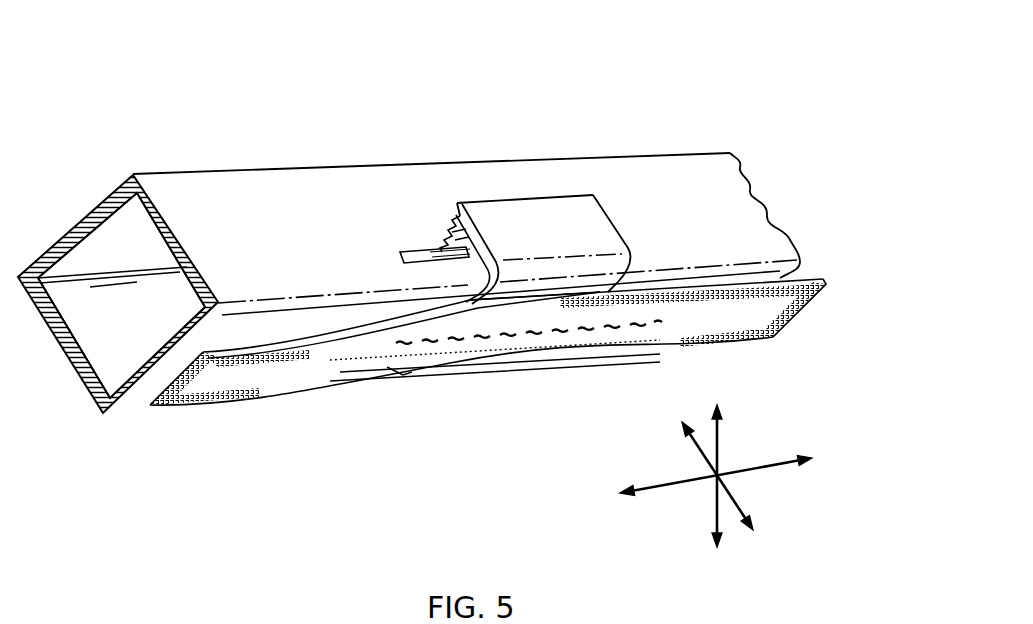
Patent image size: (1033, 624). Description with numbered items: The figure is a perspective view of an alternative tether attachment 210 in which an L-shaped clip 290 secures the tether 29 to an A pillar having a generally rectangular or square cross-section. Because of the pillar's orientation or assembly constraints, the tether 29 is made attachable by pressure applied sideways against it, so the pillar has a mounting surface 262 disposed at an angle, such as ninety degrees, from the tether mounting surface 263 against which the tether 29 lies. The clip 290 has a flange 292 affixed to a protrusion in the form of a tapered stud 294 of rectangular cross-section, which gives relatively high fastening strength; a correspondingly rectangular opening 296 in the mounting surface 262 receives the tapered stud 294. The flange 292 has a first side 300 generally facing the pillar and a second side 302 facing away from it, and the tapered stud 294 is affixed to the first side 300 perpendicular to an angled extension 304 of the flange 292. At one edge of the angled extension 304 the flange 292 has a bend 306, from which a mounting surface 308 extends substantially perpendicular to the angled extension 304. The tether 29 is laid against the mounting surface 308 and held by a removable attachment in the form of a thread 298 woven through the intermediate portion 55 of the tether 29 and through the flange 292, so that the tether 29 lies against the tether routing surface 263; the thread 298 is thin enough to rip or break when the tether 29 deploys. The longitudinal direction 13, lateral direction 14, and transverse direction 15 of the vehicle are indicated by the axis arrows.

The tether attachment 210 is at (600, 108).
The mounting surface 262 is at (213, 233).
The tether mounting surface 263 is at (142, 402).
The tether 29 is at (238, 415).
The clip 290 is at (518, 249).
The flange 292 is at (636, 228).
The tapered stud 294 is at (436, 232).
The opening 296 is at (420, 243).
The thread 298 is at (580, 332).
The first side 300 is at (482, 252).
The second side 302 is at (572, 282).
The angled extension 304 is at (605, 197).
The bend 306 is at (570, 197).
The mounting surface 308 is at (672, 340).
The intermediate portion 55 is at (503, 345).
The longitudinal direction 13 is at (765, 470).
The lateral direction 14 is at (702, 452).
The transverse direction 15 is at (720, 443).